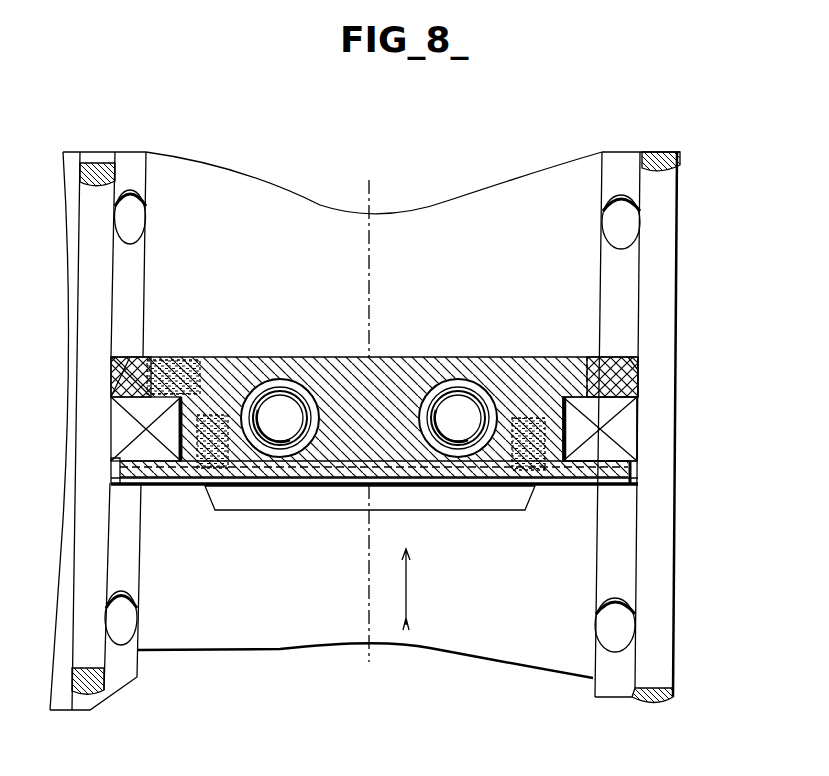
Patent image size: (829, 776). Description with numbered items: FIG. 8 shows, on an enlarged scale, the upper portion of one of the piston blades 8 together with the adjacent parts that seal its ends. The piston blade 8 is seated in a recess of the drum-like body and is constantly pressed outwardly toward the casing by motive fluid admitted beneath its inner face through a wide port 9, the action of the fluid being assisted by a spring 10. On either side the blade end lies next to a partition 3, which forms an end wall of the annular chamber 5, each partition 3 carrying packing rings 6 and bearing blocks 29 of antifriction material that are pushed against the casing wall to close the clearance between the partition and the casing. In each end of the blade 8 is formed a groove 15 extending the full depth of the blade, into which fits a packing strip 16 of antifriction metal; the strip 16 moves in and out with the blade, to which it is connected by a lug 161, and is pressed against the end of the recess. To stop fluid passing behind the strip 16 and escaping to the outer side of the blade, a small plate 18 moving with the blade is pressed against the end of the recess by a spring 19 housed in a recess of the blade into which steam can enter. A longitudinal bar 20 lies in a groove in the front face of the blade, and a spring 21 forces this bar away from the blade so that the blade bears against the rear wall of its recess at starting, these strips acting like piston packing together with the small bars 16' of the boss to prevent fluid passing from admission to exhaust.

The partition 3 is at (605, 300).
The annular chamber 5 is at (463, 633).
The packing ring 6 is at (92, 538).
The piston blade 8 is at (432, 378).
The port 9 is at (338, 500).
The spring 10 is at (285, 390).
The groove 15 is at (567, 412).
The packing strip 16 is at (376, 430).
The lug 161 is at (173, 420).
The small bar 16' is at (593, 501).
The small plate 18 is at (147, 355).
The spring 19 is at (180, 363).
The longitudinal bar 20 is at (450, 477).
The spring 21 is at (223, 473).
The bearing block 29 is at (620, 228).